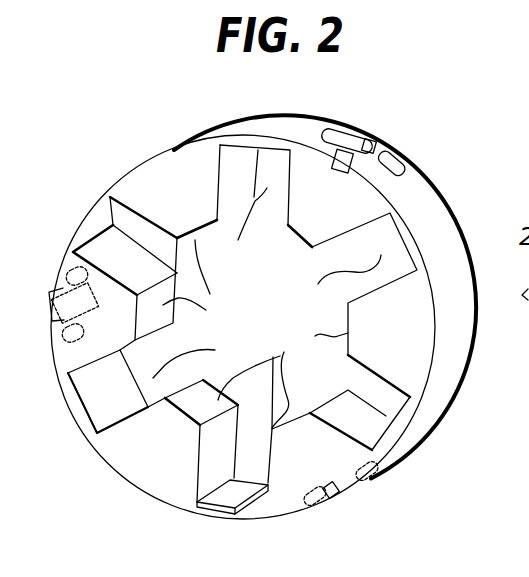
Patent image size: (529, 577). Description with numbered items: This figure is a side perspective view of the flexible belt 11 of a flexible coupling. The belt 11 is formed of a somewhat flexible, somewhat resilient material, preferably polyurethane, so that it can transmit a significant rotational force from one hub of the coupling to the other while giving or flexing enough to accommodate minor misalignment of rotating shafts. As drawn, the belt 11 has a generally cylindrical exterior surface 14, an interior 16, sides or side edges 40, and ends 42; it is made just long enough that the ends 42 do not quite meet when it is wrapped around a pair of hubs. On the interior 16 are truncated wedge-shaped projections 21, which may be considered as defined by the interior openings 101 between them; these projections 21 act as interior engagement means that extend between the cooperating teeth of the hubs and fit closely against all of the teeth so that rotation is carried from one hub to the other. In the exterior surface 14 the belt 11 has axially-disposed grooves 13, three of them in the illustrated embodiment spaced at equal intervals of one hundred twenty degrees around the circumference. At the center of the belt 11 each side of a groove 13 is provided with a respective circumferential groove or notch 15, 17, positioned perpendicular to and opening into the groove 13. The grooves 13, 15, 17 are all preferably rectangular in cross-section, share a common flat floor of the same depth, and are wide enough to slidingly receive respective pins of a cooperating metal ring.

The flexible belt 11 is at (174, 136).
The axially-disposed groove 13 is at (375, 134).
The exterior surface 14 is at (452, 258).
The circumferential groove 15 is at (338, 129).
The interior 16 is at (103, 211).
The circumferential groove 17 is at (400, 160).
The truncated wedge-shaped projection 21 is at (255, 334).
The side edge 40 is at (398, 360).
The end 42 is at (204, 514).
The interior opening 101 is at (267, 283).